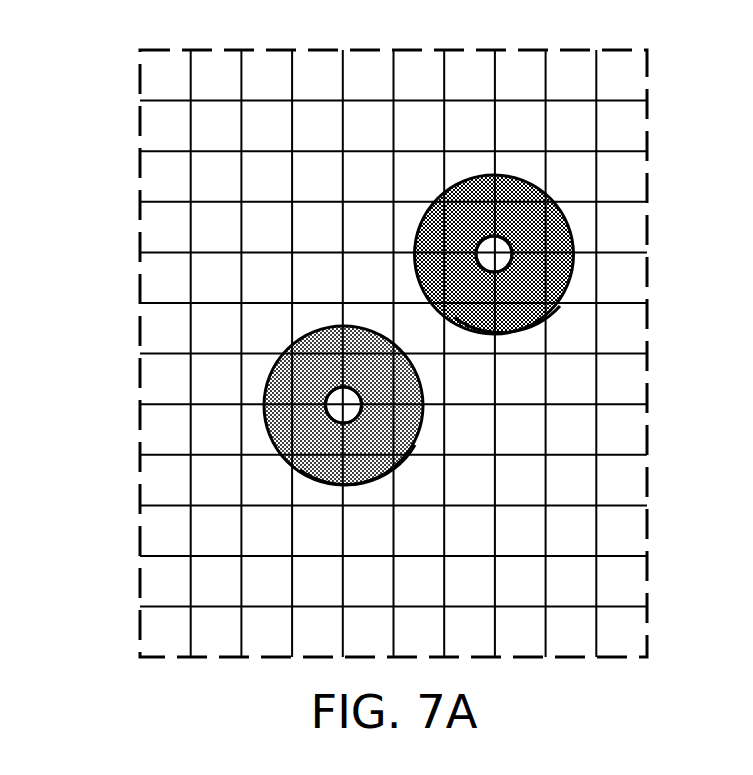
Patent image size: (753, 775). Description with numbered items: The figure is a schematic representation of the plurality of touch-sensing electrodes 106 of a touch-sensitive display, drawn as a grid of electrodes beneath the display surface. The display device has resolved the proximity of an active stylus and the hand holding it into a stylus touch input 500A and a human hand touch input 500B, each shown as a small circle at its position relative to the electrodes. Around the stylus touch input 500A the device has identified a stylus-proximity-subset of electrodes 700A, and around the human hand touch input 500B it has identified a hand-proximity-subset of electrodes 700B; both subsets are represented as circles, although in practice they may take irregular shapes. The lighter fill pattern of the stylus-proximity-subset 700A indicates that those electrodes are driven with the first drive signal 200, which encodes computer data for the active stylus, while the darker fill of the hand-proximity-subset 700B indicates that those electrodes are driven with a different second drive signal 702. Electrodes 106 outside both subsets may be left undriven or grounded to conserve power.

The touch-sensing electrodes 106 is at (118, 60).
The stylus-proximity-subset of electrodes 700A is at (275, 322).
The hand-proximity-subset of electrodes 700B is at (429, 173).
The stylus touch input 500A is at (342, 424).
The human hand touch input 500B is at (493, 273).
The second drive signal 702 is at (519, 333).
The drive signal 200 is at (401, 464).